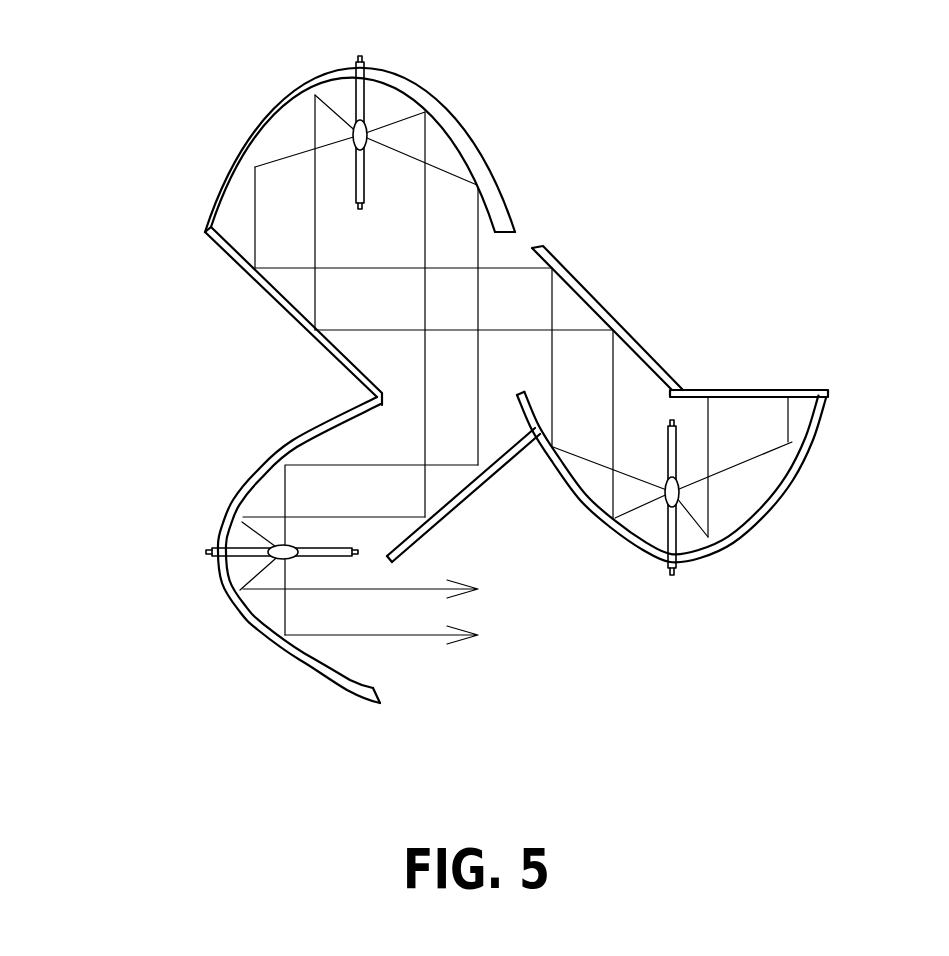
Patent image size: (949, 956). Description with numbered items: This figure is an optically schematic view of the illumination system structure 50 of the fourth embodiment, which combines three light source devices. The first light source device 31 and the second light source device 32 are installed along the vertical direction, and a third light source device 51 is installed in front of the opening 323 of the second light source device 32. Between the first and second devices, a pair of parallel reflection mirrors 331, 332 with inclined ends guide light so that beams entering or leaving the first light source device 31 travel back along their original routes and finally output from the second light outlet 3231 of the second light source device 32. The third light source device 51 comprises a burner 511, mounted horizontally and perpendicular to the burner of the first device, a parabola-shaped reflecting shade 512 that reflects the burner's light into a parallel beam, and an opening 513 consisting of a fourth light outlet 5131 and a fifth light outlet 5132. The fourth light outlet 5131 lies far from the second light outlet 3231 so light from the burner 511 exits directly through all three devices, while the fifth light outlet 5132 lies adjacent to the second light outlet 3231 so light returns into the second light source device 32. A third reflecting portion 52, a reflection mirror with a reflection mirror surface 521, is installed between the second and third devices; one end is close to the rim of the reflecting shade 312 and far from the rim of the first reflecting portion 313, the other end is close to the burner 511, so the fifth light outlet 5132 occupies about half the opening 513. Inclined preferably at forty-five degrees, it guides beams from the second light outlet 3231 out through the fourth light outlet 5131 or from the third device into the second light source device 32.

The illumination system structure 50 is at (832, 162).
The second light source device 32 is at (233, 145).
The opening 323 is at (503, 238).
The second light outlet 3231 is at (440, 222).
The reflection mirror 331 is at (590, 296).
The reflection mirror 332 is at (272, 297).
The first light source device 31 is at (743, 560).
The reflecting shade 312 is at (773, 490).
The first reflecting portion 313 is at (758, 390).
The third reflecting portion 52 is at (488, 466).
The reflection mirror surface 521 is at (403, 547).
The third light source device 51 is at (230, 648).
The burner 511 is at (270, 544).
The parabola-shaped reflecting shade 512 is at (350, 686).
The opening 513 is at (381, 685).
The fourth light outlet 5131 is at (382, 658).
The fifth light outlet 5132 is at (383, 442).